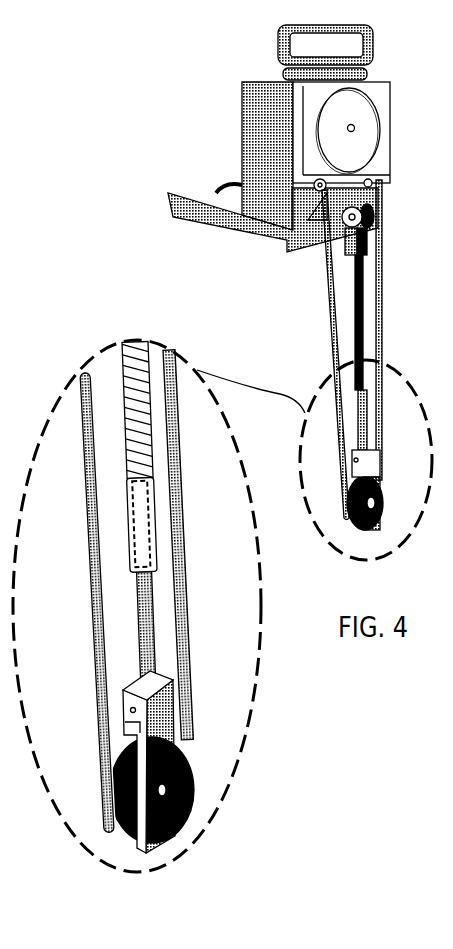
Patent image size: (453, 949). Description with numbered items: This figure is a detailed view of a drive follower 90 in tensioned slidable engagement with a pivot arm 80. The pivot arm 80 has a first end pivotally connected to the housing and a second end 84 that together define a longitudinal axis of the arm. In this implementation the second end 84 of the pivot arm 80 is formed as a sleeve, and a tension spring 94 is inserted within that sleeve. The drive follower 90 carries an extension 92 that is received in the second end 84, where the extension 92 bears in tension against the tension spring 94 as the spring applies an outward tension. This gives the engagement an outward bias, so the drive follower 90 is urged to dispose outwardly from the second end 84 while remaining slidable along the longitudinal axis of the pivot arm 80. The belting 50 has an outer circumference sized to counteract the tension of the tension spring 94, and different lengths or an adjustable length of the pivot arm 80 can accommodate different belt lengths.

The belting 50 is at (185, 658).
The pivot arm 80 is at (132, 515).
The second end 84 is at (133, 558).
The drive follower 90 is at (166, 613).
The extension 92 is at (152, 610).
The tension spring 94 is at (138, 345).